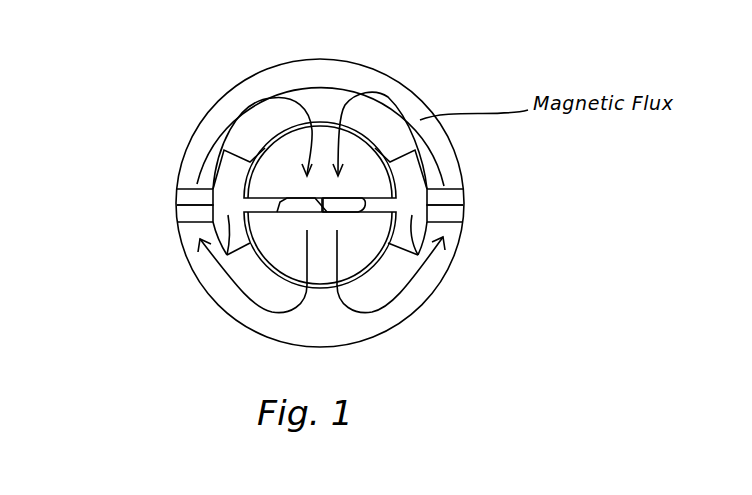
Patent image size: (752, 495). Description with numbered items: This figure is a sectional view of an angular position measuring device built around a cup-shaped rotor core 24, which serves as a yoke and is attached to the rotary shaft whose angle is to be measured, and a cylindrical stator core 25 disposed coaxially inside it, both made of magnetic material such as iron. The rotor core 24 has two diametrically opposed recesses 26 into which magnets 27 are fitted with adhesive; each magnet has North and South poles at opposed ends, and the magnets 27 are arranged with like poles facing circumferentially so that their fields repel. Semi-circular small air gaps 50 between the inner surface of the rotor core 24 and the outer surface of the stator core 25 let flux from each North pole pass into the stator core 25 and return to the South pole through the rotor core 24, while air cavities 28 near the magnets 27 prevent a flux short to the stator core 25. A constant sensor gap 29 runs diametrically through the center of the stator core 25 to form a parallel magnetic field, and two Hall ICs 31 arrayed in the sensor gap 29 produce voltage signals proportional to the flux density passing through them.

The rotor core 24 is at (325, 78).
The stator core 25 is at (318, 268).
The recesses 26 is at (177, 202).
The magnets 27 is at (177, 212).
The air cavities 28 is at (227, 255).
The sensor gap 29 is at (376, 203).
The Hall ICs 31 is at (298, 202).
The air gaps 50 is at (312, 124).